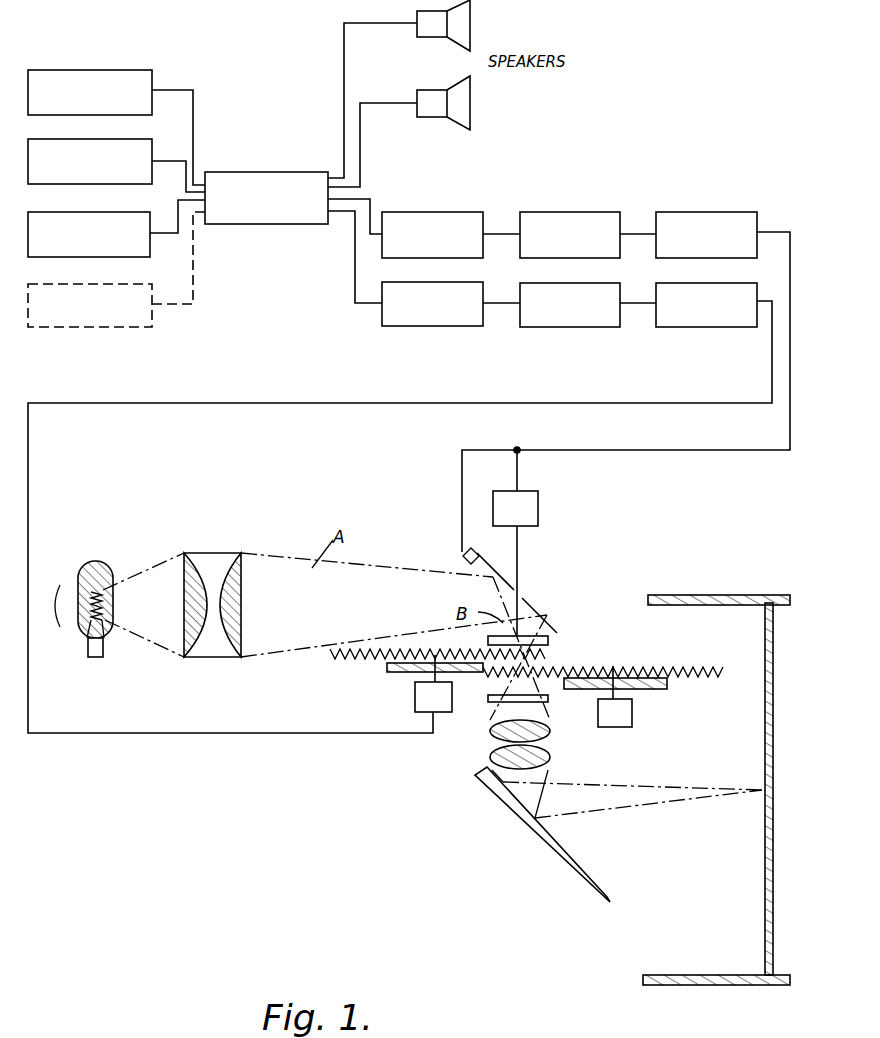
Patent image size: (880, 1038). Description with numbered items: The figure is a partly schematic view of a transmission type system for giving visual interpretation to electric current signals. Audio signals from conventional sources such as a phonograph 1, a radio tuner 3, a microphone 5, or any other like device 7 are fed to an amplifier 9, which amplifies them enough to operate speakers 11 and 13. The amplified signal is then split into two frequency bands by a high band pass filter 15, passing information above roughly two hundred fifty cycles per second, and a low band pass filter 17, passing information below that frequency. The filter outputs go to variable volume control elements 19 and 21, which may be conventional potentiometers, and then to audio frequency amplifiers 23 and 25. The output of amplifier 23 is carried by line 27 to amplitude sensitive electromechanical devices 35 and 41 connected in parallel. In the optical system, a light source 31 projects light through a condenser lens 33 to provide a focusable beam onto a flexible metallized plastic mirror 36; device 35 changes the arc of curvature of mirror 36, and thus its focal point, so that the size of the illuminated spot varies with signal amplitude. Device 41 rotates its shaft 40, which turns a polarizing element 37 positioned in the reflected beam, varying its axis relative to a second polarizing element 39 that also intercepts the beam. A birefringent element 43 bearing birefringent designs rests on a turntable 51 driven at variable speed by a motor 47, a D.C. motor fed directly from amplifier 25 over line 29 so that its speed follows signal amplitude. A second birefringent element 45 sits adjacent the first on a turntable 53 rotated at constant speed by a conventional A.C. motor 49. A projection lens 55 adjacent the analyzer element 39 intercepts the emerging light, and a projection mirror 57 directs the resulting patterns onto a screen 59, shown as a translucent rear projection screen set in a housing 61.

The phonograph 1 is at (143, 80).
The radio tuner 3 is at (143, 147).
The microphone 5 is at (135, 220).
The other like device 7 is at (143, 290).
The amplifier 9 is at (260, 224).
The speaker 11 is at (437, 30).
The speaker 13 is at (440, 110).
The high band pass filter 15 is at (438, 213).
The low band pass filter 17 is at (428, 326).
The variable volume control element 19 is at (585, 197).
The variable volume control element 21 is at (565, 327).
The audio frequency amplifier 23 is at (722, 197).
The audio frequency amplifier 25 is at (697, 327).
The line 27 is at (638, 450).
The line 29 is at (378, 403).
The light source 31 is at (100, 568).
The condenser lens 33 is at (213, 560).
The electromechanical device 35 is at (479, 552).
The mirror 36 is at (533, 606).
The polarizing element 37 is at (548, 641).
The polarizing element 39 is at (548, 699).
The shaft 40 is at (520, 563).
The electromechanical device 41 is at (538, 506).
The birefringent element 43 is at (348, 660).
The second birefringent element 45 is at (640, 668).
The motor 47 is at (415, 693).
The A.C. motor 49 is at (632, 722).
The turntable 51 is at (470, 672).
The turntable 53 is at (665, 689).
The projection lens 55 is at (550, 745).
The projection mirror 57 is at (512, 808).
The screen 59 is at (765, 765).
The housing 61 is at (733, 985).